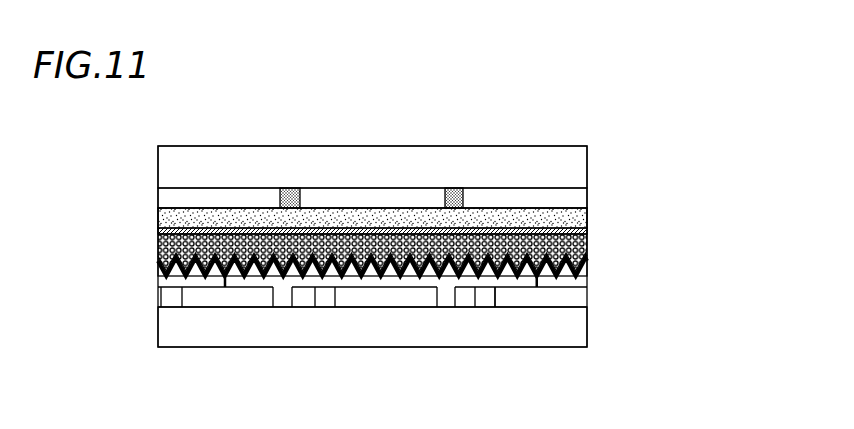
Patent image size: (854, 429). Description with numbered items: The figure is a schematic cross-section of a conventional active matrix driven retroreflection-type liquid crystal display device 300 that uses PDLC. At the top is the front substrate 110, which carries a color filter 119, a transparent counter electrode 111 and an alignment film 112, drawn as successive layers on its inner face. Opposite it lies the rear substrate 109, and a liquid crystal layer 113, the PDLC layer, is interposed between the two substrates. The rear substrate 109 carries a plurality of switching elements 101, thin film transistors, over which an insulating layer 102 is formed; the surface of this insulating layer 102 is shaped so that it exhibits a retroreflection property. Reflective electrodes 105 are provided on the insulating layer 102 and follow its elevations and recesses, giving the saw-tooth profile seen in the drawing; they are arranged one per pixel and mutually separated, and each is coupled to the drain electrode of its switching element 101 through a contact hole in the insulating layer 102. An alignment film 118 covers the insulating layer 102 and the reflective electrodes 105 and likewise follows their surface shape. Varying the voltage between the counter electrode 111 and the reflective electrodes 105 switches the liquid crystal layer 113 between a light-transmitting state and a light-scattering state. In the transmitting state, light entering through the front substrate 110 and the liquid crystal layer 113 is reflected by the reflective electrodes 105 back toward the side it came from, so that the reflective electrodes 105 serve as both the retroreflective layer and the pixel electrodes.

The display device 300 is at (616, 104).
The front substrate 110 is at (577, 160).
The color filter 119 is at (578, 195).
The transparent counter electrode 111 is at (577, 215).
The alignment film 112 is at (585, 233).
The alignment film 118 is at (587, 263).
The reflective electrodes 105 is at (585, 273).
The switching elements 101 is at (577, 297).
The insulating layer 102 is at (527, 277).
The rear substrate 109 is at (577, 332).
The liquid crystal layer 113 is at (158, 248).